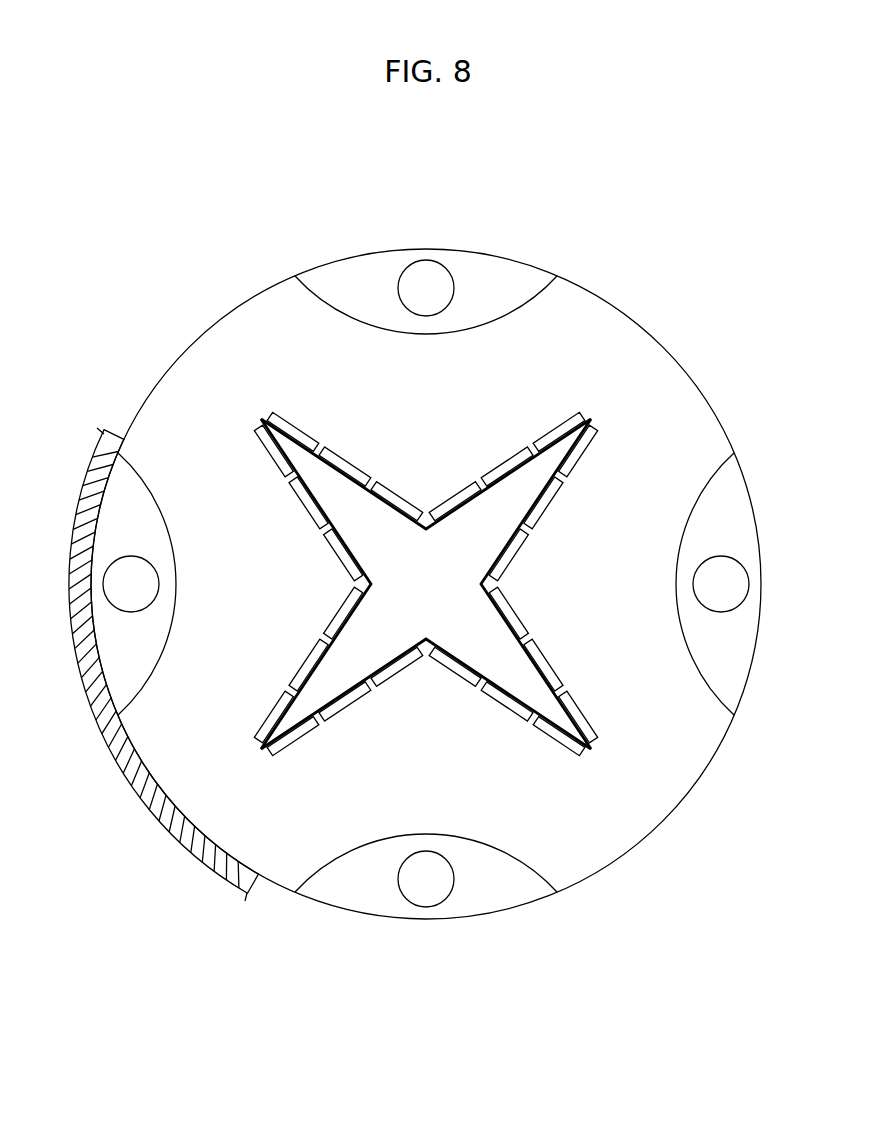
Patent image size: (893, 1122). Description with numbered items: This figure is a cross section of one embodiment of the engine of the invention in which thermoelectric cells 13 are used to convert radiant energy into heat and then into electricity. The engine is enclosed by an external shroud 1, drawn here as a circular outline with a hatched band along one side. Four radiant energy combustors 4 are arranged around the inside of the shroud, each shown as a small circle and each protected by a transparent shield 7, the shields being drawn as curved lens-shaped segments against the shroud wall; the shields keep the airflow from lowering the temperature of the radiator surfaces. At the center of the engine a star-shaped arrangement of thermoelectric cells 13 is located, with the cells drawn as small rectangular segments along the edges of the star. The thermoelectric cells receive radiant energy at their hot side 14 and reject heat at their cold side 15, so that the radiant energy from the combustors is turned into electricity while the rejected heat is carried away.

The external shroud 1 is at (87, 473).
The radiant energy combustors 4 is at (749, 584).
The transparent shields 7 is at (681, 543).
The thermoelectric cells 13 is at (398, 497).
The hot side 14 is at (414, 758).
The cold side 15 is at (445, 595).